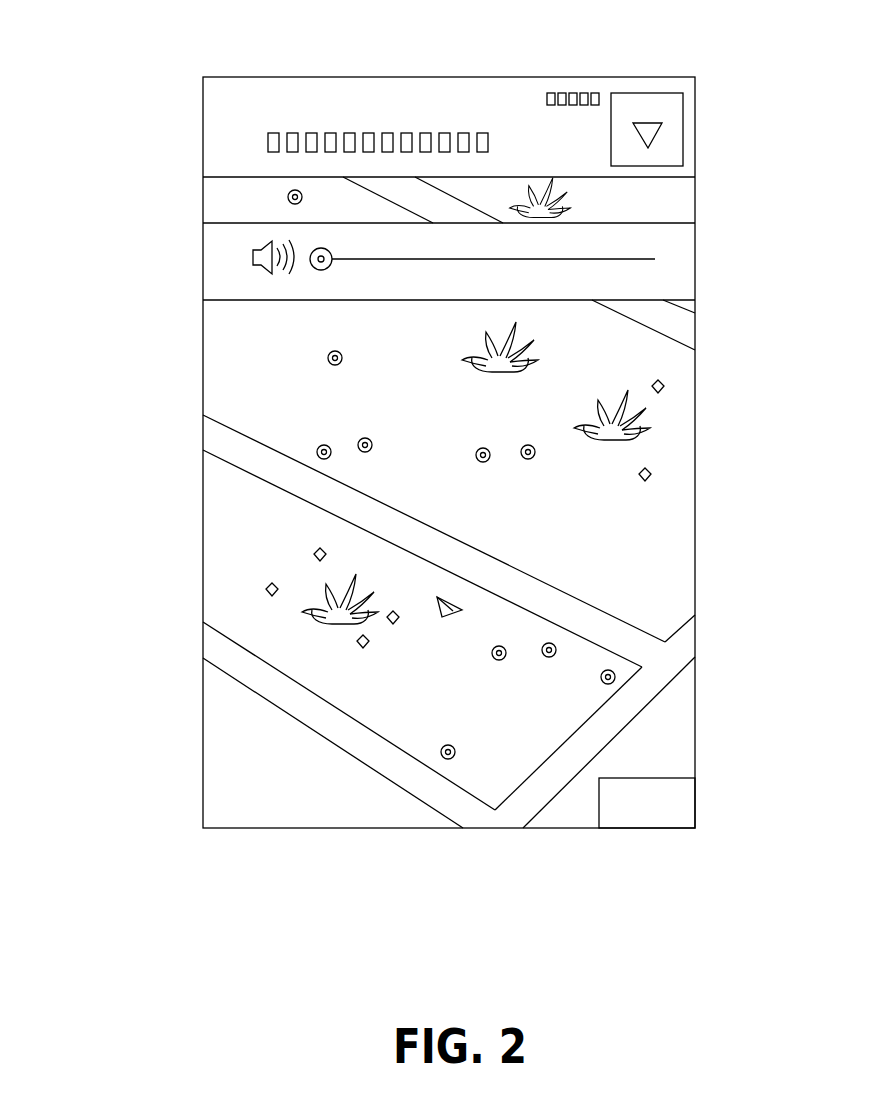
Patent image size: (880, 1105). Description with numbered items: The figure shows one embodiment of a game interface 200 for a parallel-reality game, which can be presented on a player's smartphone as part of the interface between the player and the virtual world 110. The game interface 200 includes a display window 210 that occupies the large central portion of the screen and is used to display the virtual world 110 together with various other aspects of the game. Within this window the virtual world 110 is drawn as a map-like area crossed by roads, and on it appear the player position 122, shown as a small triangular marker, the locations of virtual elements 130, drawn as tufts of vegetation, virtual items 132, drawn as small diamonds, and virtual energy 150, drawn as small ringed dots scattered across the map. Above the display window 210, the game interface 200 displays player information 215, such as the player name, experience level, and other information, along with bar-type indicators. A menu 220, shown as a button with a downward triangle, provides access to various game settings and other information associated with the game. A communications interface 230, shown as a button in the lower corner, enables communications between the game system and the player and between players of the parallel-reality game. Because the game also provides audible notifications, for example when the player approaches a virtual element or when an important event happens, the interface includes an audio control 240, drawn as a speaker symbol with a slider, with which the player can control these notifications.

The game interface 200 is at (460, 28).
The player information 215 is at (216, 95).
The menu 220 is at (675, 127).
The display window 210 is at (685, 207).
The audio control 240 is at (216, 243).
The virtual world 110 is at (685, 535).
The virtual elements 130 is at (465, 345).
The virtual energy 150 is at (342, 362).
The virtual items 132 is at (313, 557).
The player position 122 is at (437, 612).
The communications interface 230 is at (688, 807).